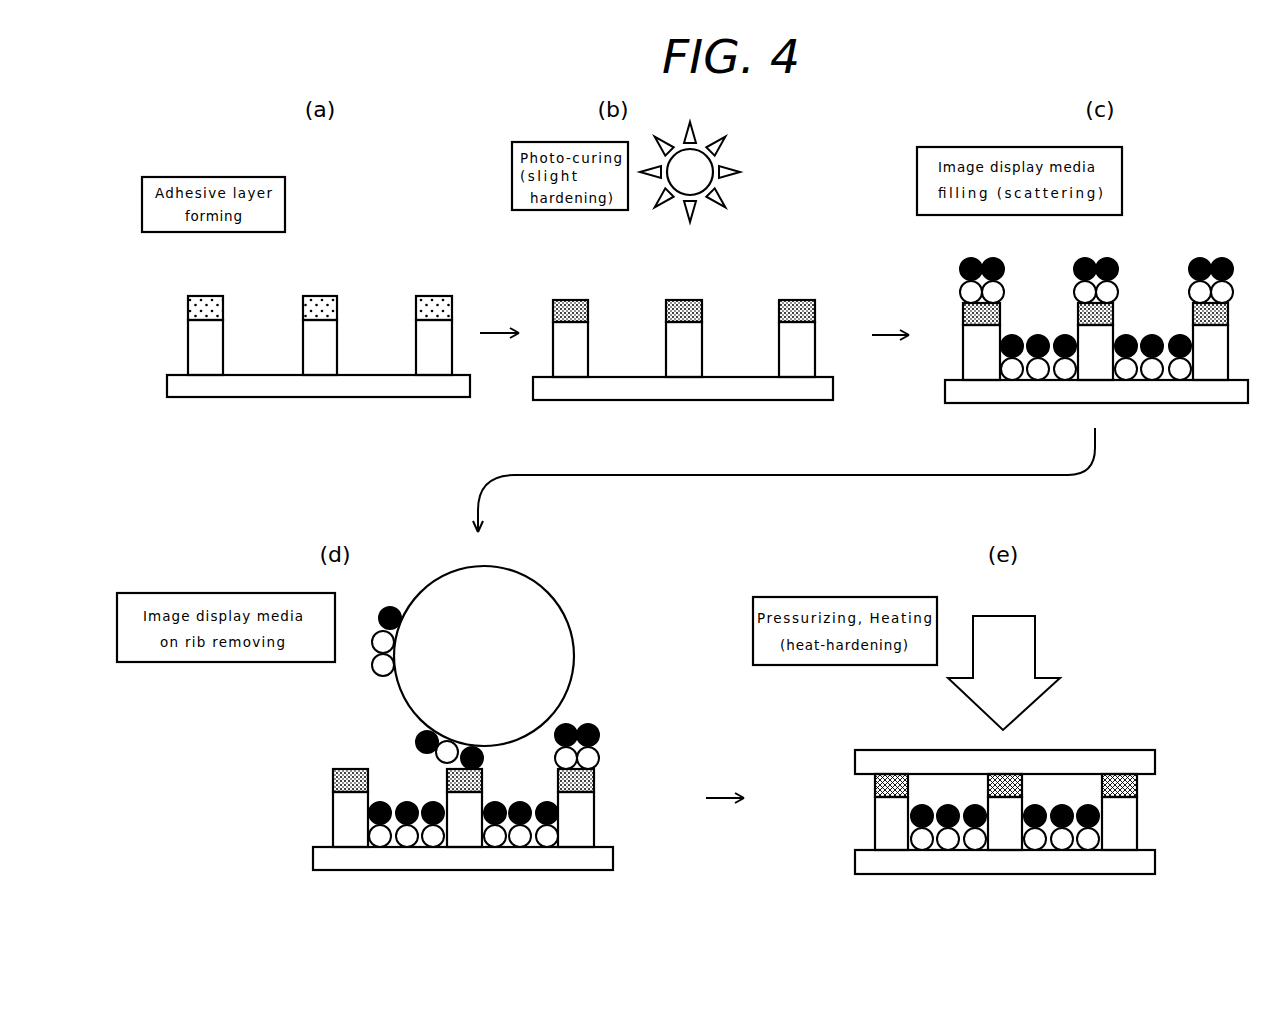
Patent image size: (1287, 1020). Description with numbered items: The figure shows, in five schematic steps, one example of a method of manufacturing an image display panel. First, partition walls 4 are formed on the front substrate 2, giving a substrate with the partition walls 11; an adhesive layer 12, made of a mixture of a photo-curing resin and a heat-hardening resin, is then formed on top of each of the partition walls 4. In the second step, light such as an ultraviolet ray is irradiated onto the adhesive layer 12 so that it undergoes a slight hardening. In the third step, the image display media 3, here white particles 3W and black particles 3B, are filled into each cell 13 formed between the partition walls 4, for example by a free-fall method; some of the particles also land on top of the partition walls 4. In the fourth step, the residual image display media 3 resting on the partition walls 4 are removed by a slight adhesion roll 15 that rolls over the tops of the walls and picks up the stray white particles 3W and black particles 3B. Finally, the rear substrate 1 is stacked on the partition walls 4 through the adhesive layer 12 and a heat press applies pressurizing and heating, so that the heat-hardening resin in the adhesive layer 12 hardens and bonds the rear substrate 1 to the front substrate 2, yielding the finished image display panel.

The rear substrate 1 is at (1057, 757).
The front substrate 2 is at (255, 393).
The image display media 3 is at (827, 546).
The white particles 3W is at (1182, 376).
The black particles 3B is at (1163, 357).
The partition walls 4 is at (327, 347).
The substrate with the partition walls 11 is at (727, 578).
The adhesive layer 12 is at (322, 298).
The cell 13 is at (1038, 328).
The slight adhesion roll 15 is at (548, 625).